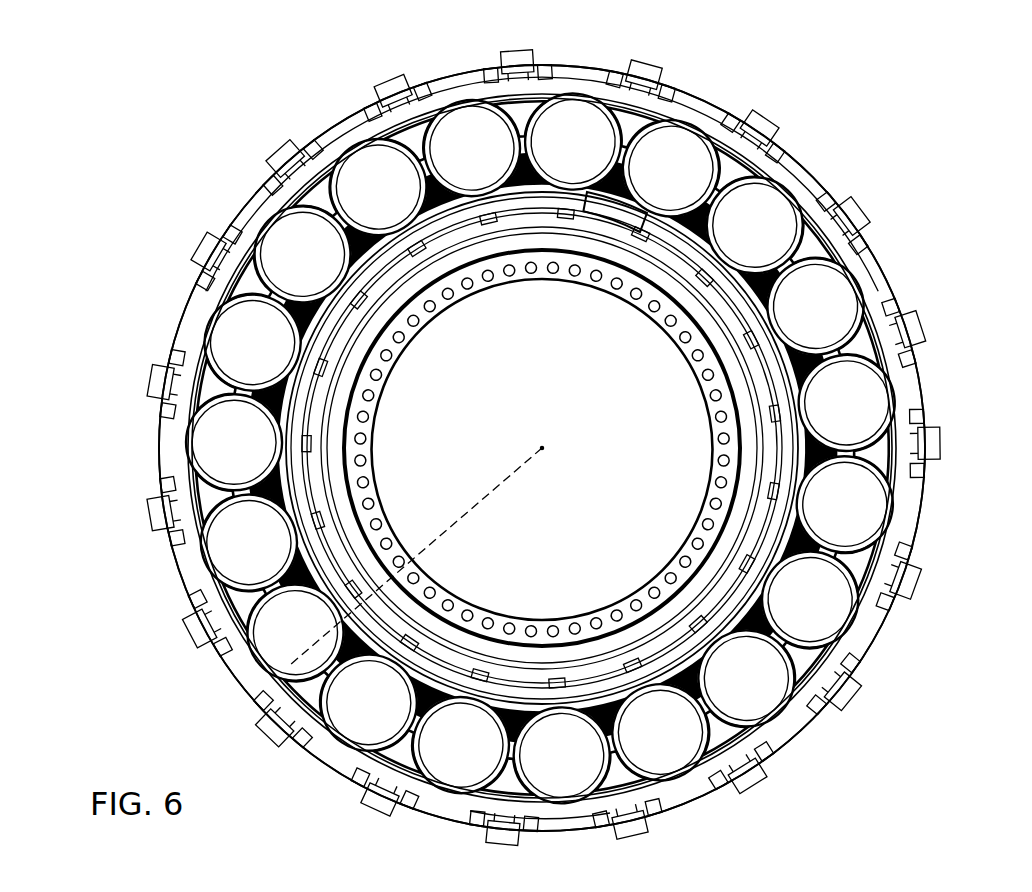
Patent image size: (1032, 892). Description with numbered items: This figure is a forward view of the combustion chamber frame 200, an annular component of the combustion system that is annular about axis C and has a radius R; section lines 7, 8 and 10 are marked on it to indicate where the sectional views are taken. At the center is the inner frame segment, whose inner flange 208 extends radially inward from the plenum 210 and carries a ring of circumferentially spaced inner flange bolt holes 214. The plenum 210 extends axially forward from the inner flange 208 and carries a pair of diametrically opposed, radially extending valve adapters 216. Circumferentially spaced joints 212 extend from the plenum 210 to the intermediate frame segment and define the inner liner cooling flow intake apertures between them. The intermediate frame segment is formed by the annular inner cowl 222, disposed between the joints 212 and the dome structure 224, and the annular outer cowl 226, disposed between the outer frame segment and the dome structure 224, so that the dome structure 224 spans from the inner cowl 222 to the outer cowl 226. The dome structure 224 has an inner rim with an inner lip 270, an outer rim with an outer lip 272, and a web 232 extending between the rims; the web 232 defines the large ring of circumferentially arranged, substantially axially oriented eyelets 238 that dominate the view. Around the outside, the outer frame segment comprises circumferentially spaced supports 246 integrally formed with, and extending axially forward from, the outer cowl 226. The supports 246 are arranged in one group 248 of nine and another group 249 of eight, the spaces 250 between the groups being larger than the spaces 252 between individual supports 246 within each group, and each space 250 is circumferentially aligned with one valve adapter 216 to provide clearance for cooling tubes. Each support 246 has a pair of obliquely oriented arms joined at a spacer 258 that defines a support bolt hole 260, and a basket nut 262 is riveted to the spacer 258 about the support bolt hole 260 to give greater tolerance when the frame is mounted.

The combustion chamber frame 200 is at (206, 68).
The inner flange 208 is at (697, 355).
The plenum 210 is at (653, 270).
The joints 212 is at (757, 322).
The inner flange bolt holes 214 is at (703, 563).
The valve adapters 216 is at (600, 235).
The inner cowl 222 is at (730, 510).
The dome structure 224 is at (742, 168).
The outer cowl 226 is at (590, 80).
The web 232 is at (518, 818).
The eyelets 238 is at (662, 740).
The supports 246 is at (195, 636).
The group 248 is at (131, 477).
The group 249 is at (936, 591).
The spaces 250 is at (700, 92).
The spaces 252 is at (158, 298).
The spacer 258 is at (385, 95).
The support bolt hole 260 is at (406, 77).
The basket nut 262 is at (403, 792).
The inner lip 270 is at (310, 478).
The outer lip 272 is at (815, 728).
The section line 7- 7 is at (488, 22).
The section line 8- 8 is at (268, 124).
The section line 10- 10 is at (530, 795).
The axis C is at (545, 447).
The radius R is at (470, 512).